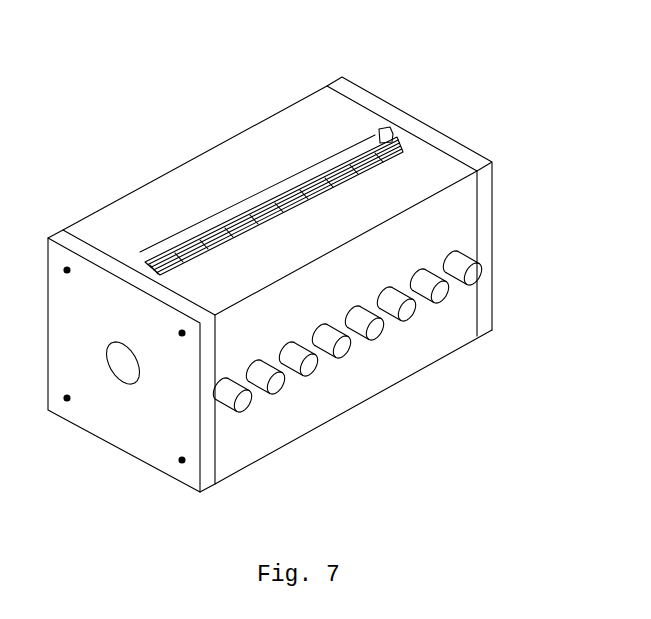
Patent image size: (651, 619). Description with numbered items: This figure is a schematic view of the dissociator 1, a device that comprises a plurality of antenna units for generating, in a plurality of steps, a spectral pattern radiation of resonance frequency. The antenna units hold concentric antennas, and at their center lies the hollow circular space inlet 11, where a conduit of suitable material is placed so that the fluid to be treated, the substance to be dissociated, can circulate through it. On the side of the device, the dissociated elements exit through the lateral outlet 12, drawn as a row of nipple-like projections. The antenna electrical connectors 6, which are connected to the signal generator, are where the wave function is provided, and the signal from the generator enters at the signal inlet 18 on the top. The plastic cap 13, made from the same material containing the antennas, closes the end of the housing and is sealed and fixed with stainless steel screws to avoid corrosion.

The dissociator device 1 is at (210, 145).
The antenna electrical connectors 6 is at (408, 135).
The circular space inlet 11 is at (133, 382).
The outlet of the dissociated elements 12 is at (278, 393).
The plastic cap 13 is at (490, 193).
The signal inlet from the generator 18 is at (166, 250).